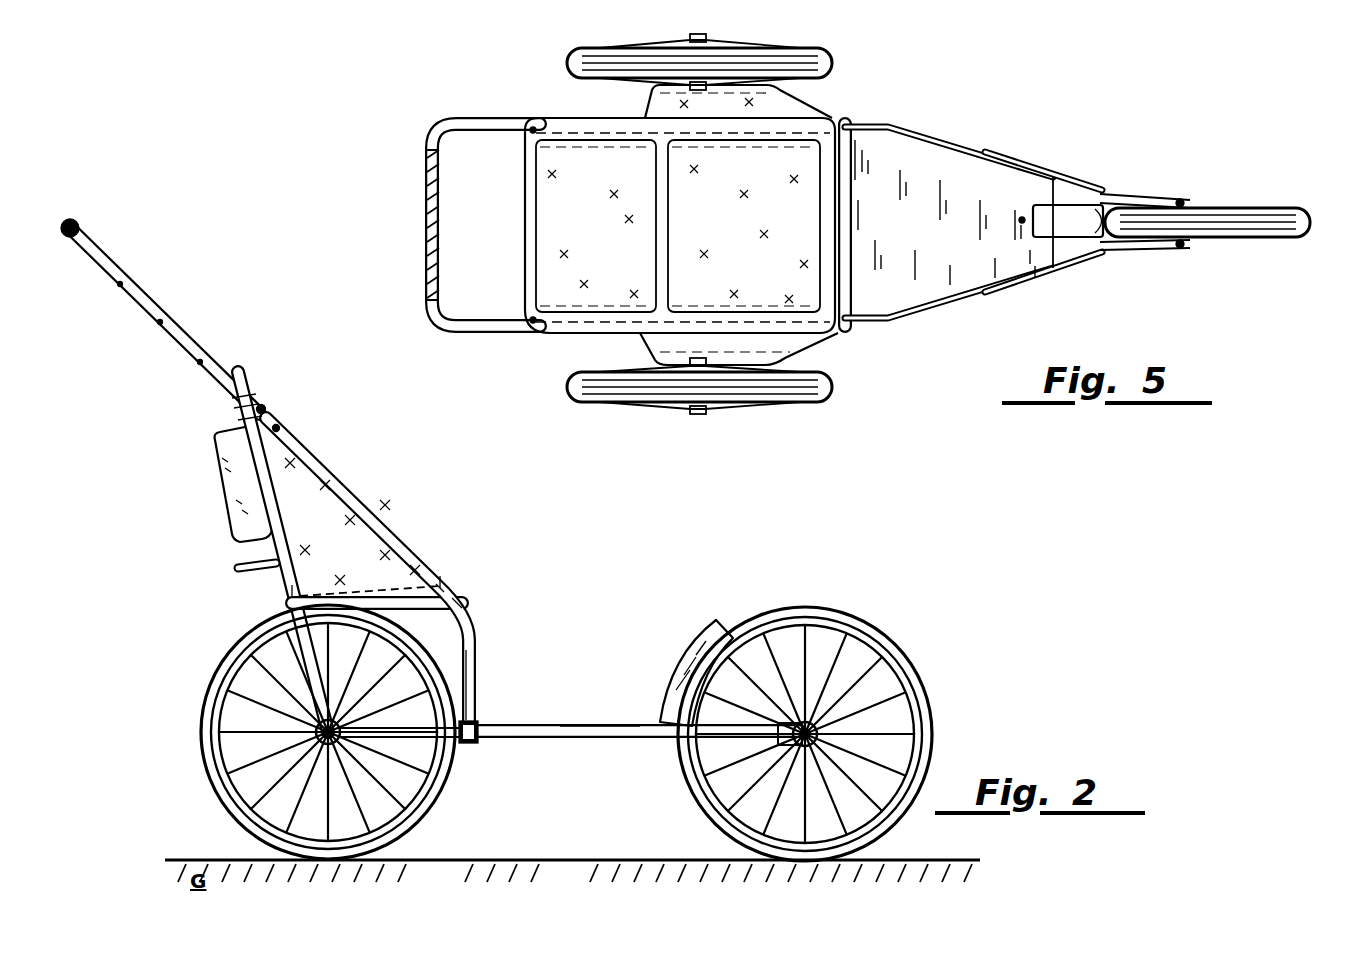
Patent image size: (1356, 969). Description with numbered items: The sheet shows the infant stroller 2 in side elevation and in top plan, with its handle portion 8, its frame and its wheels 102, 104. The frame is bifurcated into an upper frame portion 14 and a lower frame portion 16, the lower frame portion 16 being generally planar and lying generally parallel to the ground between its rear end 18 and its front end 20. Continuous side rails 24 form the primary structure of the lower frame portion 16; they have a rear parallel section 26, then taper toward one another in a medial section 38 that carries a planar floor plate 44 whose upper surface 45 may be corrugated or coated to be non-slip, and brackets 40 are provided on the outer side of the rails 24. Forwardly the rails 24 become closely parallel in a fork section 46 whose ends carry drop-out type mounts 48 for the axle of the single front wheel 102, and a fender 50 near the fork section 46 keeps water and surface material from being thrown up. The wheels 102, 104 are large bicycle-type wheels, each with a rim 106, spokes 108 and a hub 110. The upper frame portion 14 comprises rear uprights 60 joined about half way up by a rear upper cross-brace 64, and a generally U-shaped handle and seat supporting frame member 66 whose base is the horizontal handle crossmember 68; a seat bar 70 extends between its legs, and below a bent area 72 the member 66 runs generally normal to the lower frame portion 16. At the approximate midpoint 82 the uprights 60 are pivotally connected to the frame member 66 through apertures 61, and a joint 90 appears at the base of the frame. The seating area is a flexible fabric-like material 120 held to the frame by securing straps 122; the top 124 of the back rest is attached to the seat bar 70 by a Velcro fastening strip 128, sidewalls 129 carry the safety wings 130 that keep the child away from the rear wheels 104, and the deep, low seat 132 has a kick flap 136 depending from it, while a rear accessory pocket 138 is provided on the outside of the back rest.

In FIG. 2, the infant stroller 2 is at (586, 806).
In FIG. 5, the infant stroller 2 is at (1090, 150).
In FIG. 2, the handle portion 8 is at (78, 258).
In FIG. 2, the upper frame portion 14 is at (318, 458).
In FIG. 2, the lower frame portion 16 is at (629, 738).
In FIG. 5, the lower frame portion 16 is at (1045, 223).
In FIG. 2, the rear end 18 is at (523, 724).
In FIG. 2, the front end 20 is at (795, 723).
In FIG. 2, the side rails 24 is at (514, 740).
In FIG. 5, the side rails 24 is at (950, 312).
In FIG. 2, the rear parallel section 26 is at (378, 732).
In FIG. 5, the medial section 38 is at (940, 138).
In FIG. 2, the brackets 40 is at (478, 720).
In FIG. 5, the brackets 40 is at (845, 326).
In FIG. 5, the floor plate 44 is at (998, 160).
In FIG. 2, the upper surface 45 is at (565, 722).
In FIG. 5, the upper surface 45 is at (932, 242).
In FIG. 5, the fork section 46 is at (1173, 228).
In FIG. 5, the mounts 48 is at (1185, 196).
In FIG. 2, the fender 50 is at (688, 660).
In FIG. 5, the fender 50 is at (1061, 221).
In FIG. 2, the rear uprights 60 is at (284, 506).
In FIG. 2, the apertures 61 is at (264, 404).
In FIG. 2, the rear upper cross-brace 64 is at (238, 572).
In FIG. 2, the handle and seat supporting frame member 66 is at (364, 502).
In FIG. 2, the handle crossmember 68 is at (80, 220).
In FIG. 5, the handle crossmember 68 is at (440, 330).
In FIG. 5, the seat bar 70 is at (522, 330).
In FIG. 2, the bent area 72 is at (472, 612).
In FIG. 2, the midpoint 82 is at (280, 426).
In FIG. 2, the frame joint 90 is at (465, 752).
In FIG. 2, the front wheel 102 is at (868, 626).
In FIG. 5, the front wheel 102 is at (1280, 208).
In FIG. 2, the rear wheels 104 is at (523, 724).
In FIG. 5, the rear wheels 104 is at (830, 50).
In FIG. 2, the rim 106 is at (232, 802).
In FIG. 2, the spokes 108 is at (248, 704).
In FIG. 2, the hubs 110 is at (352, 700).
In FIG. 5, the hubs 110 is at (698, 414).
In FIG. 2, the fabric-like material 120 is at (240, 426).
In FIG. 5, the fabric-like material 120 is at (838, 122).
In FIG. 2, the securing straps 122 is at (446, 586).
In FIG. 2, the top of the back rest 124 is at (236, 402).
In FIG. 5, the Velcro fastening strip 128 is at (540, 218).
In FIG. 2, the sidewalls 129 is at (378, 592).
In FIG. 2, the safety wings 130 is at (398, 538).
In FIG. 5, the safety wings 130 is at (748, 362).
In FIG. 5, the seat 132 is at (764, 238).
In FIG. 2, the kick flap 136 is at (476, 652).
In FIG. 2, the rear accessory pocket 138 is at (220, 485).